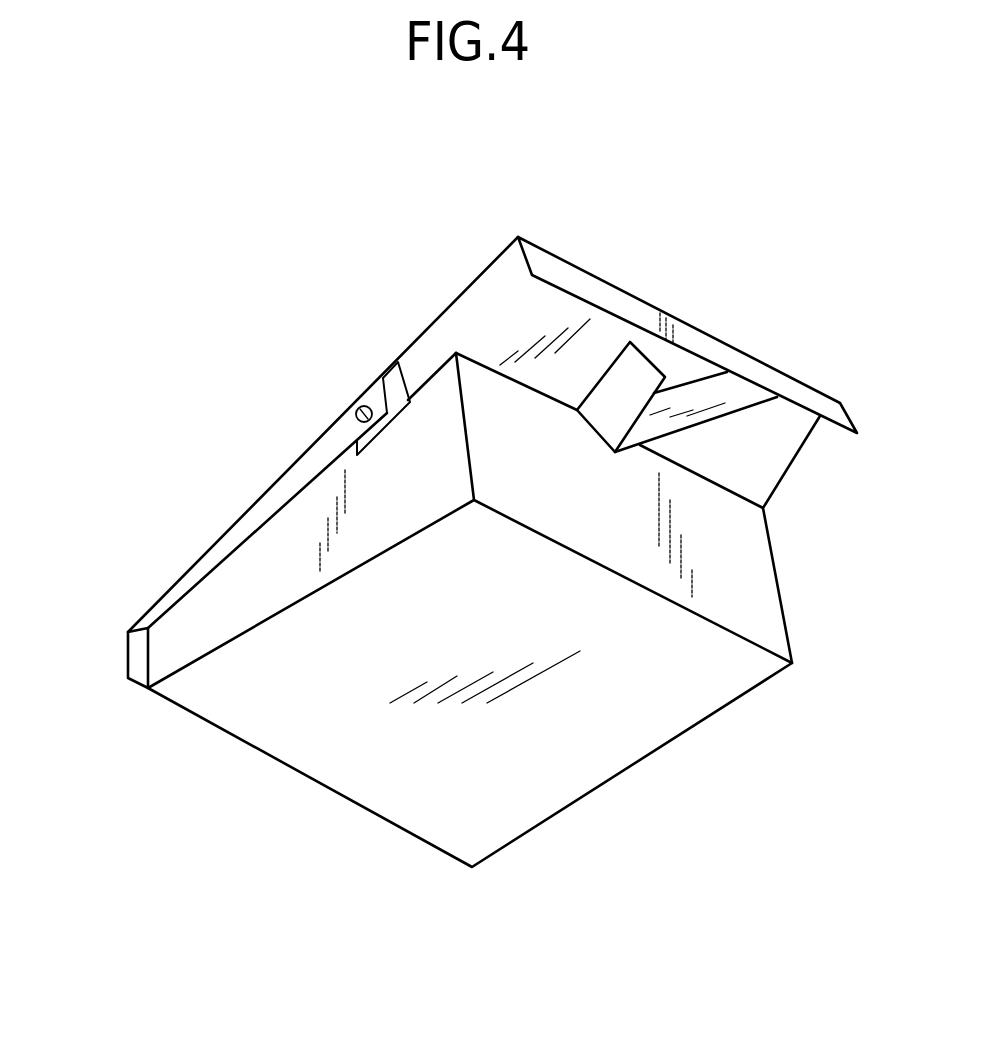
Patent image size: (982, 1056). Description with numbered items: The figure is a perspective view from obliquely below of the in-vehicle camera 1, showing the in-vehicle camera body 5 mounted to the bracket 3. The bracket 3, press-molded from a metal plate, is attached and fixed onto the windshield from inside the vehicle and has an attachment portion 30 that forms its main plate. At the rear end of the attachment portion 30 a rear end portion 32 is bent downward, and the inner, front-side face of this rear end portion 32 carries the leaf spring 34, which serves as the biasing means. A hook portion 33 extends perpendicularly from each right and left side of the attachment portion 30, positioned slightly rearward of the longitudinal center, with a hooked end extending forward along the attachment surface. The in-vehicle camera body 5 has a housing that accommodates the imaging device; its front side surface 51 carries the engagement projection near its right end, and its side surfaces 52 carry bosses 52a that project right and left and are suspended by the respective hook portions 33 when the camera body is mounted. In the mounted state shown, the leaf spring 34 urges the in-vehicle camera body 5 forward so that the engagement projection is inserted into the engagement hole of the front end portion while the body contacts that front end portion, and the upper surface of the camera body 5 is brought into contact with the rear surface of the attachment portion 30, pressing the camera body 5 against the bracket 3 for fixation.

The in-vehicle camera 1 is at (740, 160).
The bracket 3 is at (518, 237).
The attachment portion 30 is at (489, 291).
The rear end portion 32 is at (605, 300).
The hook portion 33 is at (384, 380).
The leaf spring 34 is at (705, 393).
The in-vehicle camera body 5 is at (796, 668).
The front side surface 51 is at (128, 653).
The side surface 52 is at (272, 543).
The boss 52a is at (356, 409).